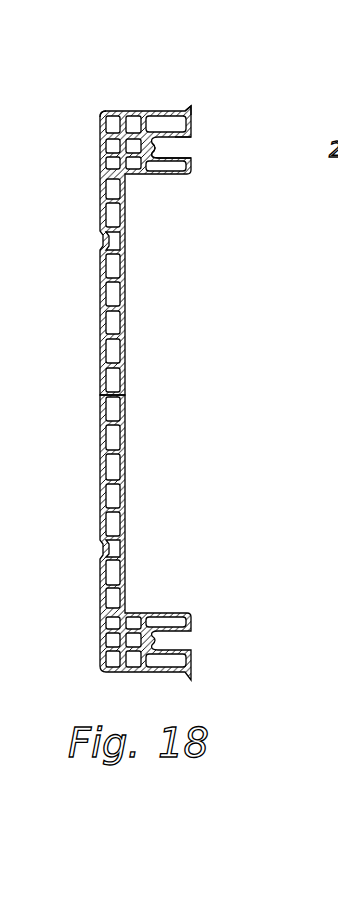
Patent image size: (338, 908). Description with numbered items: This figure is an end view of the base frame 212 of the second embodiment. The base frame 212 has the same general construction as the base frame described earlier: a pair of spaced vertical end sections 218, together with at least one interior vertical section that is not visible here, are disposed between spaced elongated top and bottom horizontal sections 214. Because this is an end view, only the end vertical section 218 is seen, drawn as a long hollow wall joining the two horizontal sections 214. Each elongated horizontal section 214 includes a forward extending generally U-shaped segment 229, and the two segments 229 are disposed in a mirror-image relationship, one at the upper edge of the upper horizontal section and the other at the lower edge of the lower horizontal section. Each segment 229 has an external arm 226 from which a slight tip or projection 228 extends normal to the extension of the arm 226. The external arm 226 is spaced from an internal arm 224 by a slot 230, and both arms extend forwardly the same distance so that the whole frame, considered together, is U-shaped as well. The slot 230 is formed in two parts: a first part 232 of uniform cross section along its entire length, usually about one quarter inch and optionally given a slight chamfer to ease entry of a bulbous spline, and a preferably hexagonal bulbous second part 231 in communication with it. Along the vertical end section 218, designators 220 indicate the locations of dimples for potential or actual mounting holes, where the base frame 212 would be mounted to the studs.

The base frame 212 is at (155, 392).
The elongated horizontal section 214 is at (100, 287).
The vertical end section 218 is at (100, 323).
The dimple location 220 is at (80, 237).
The internal arm 224 is at (154, 163).
The external arm 226 is at (160, 124).
The tip or projection 228 is at (192, 108).
The U-shaped segment 229 is at (119, 97).
The slot 230 is at (206, 145).
The bulbous second part 231 is at (160, 150).
The first part 232 is at (193, 127).